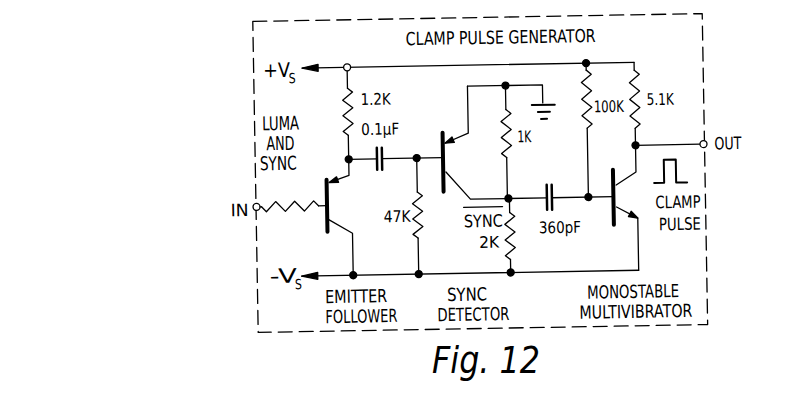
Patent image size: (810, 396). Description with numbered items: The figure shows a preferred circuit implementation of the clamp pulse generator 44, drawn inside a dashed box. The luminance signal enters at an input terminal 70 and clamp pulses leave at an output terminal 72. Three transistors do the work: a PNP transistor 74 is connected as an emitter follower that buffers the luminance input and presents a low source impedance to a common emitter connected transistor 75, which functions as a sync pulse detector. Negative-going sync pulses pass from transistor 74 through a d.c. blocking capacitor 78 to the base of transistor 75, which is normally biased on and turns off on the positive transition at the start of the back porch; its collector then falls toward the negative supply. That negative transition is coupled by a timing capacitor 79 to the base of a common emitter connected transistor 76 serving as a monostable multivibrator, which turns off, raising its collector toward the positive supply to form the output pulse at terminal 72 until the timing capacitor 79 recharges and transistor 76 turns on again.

The clamp pulse generator 44 is at (703, 59).
The input terminal 70 is at (262, 204).
The output terminal 72 is at (702, 147).
The PNP transistor 74 is at (352, 210).
The common emitter connected transistor 75 is at (478, 172).
The common emitter connected transistor 76 is at (645, 207).
The d.c. blocking capacitor 78 is at (383, 168).
The timing capacitor 79 is at (547, 186).